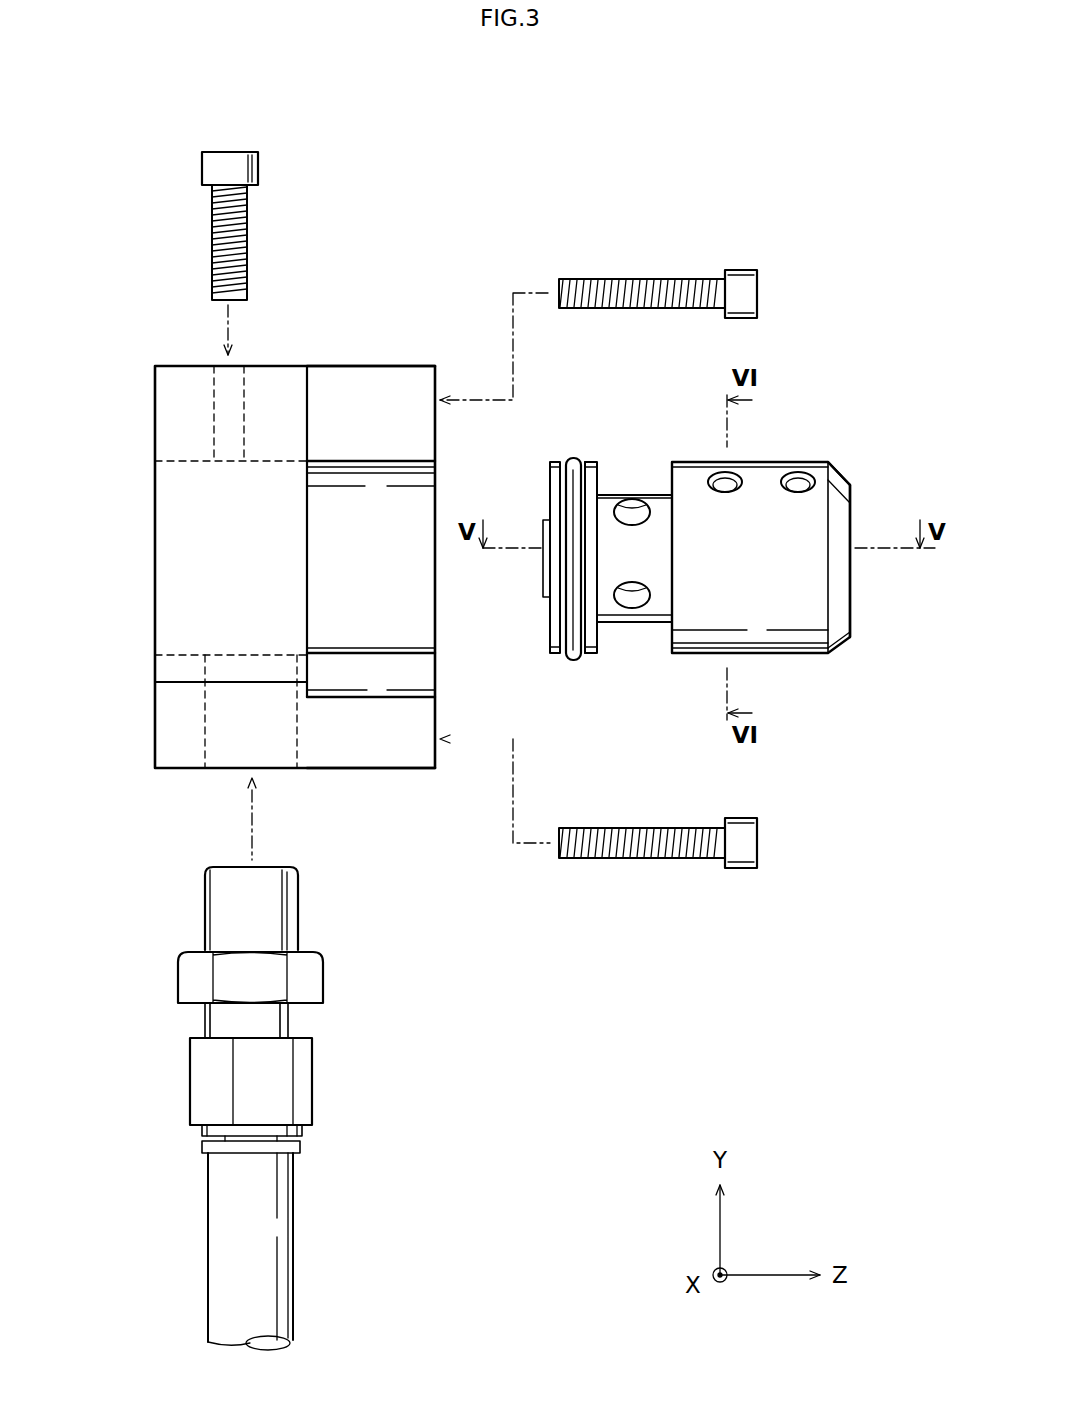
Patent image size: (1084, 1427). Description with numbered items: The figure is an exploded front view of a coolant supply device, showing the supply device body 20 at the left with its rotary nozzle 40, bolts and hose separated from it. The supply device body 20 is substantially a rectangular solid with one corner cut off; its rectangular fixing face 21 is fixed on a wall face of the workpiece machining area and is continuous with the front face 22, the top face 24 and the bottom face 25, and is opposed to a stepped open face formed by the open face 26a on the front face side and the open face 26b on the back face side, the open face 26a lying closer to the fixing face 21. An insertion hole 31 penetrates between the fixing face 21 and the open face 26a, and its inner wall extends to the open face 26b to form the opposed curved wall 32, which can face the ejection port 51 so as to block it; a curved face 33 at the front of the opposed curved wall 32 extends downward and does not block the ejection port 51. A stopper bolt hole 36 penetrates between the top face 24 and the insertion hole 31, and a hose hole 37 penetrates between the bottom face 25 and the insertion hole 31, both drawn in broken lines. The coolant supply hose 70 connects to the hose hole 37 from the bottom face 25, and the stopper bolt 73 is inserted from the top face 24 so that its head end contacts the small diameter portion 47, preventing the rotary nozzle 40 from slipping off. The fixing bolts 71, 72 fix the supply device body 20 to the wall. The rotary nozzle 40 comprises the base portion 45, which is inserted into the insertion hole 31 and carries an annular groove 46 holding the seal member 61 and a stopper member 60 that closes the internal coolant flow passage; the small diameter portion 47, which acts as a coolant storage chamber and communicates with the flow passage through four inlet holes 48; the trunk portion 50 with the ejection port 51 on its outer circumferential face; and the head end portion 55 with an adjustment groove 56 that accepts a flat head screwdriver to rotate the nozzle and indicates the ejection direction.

The supply device body 20 is at (128, 418).
The fixing face 21 is at (154, 556).
The front face 22 is at (210, 520).
The top face 24 is at (287, 366).
The bottom face 25 is at (330, 770).
The open face on front face side 26a is at (308, 410).
The open face on back face side 26b is at (437, 767).
The insertion hole 31 is at (210, 606).
The opposed curved wall 32 is at (378, 575).
The curved face 33 is at (410, 675).
The stopper bolt hole 36 is at (215, 382).
The hose hole 37 is at (232, 745).
The rotary nozzle 40 is at (657, 434).
The base portion 45 is at (598, 682).
The annular groove 46 is at (574, 618).
The small diameter portion 47 is at (641, 632).
The inlet hole 48 is at (632, 595).
The trunk portion 50 is at (787, 660).
The ejection port 51 is at (798, 480).
The head end portion 55 is at (874, 625).
The adjustment groove 56 is at (853, 490).
The stopper member 60 is at (543, 535).
The seal member 61 is at (574, 458).
The coolant supply hose 70 is at (265, 1253).
The fixing bolt 71 is at (740, 270).
The fixing bolt 72 is at (740, 866).
The stopper bolt 73 is at (230, 160).